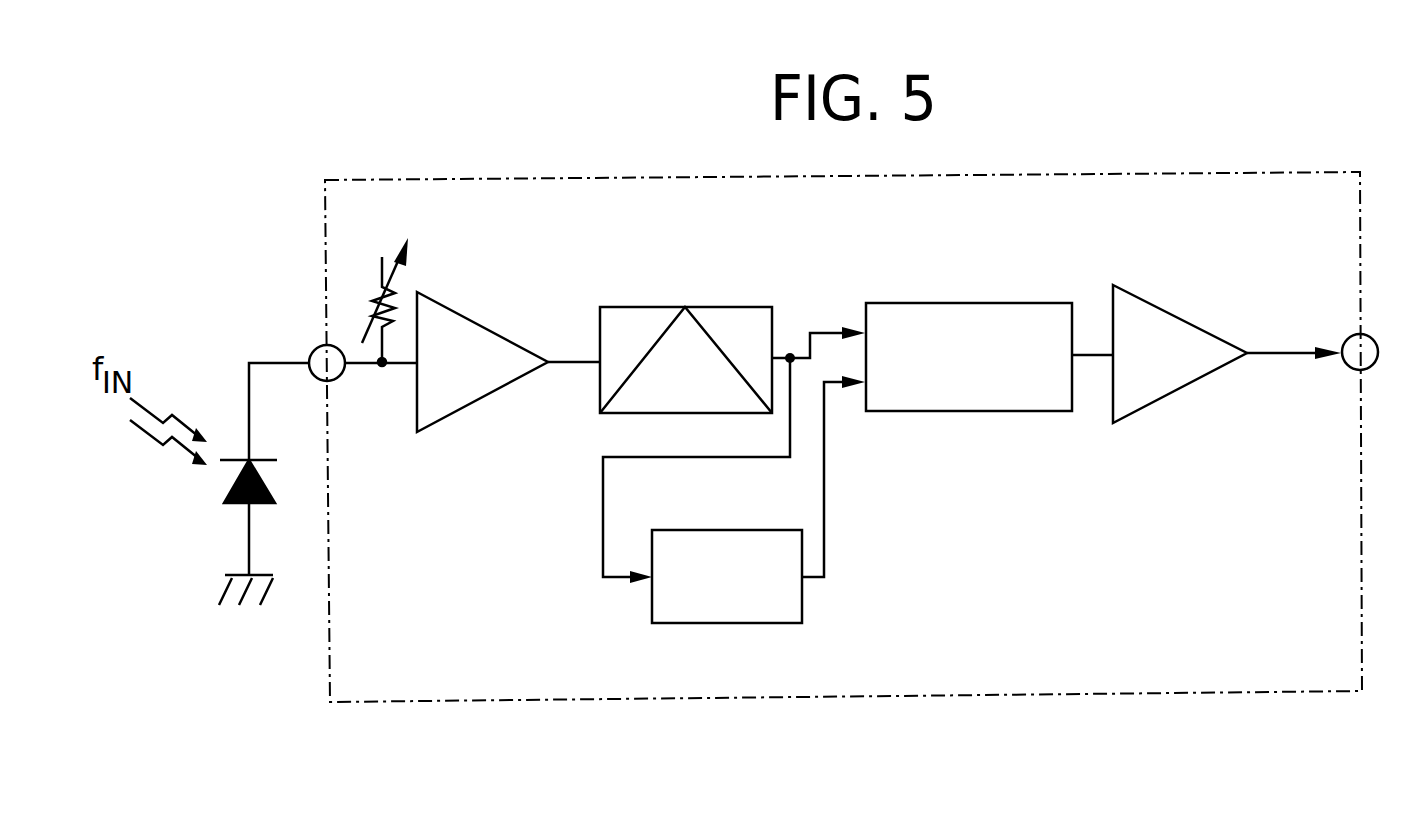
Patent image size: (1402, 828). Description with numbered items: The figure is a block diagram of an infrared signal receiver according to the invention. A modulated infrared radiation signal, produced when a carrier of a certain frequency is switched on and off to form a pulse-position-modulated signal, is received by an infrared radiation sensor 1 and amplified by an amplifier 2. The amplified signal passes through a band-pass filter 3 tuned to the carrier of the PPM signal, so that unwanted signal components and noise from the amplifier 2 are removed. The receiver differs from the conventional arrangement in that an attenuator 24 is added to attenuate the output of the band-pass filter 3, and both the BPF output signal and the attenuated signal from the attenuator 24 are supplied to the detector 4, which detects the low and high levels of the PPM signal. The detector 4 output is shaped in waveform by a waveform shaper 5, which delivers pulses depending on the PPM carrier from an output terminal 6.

The infrared radiation sensor 1 is at (272, 479).
The amplifier 2 is at (481, 323).
The band-pass filter 3 is at (718, 307).
The detector 4 is at (968, 302).
The waveform shaper 5 is at (1180, 315).
The output terminal 6 is at (1345, 368).
The attenuator 24 is at (802, 598).